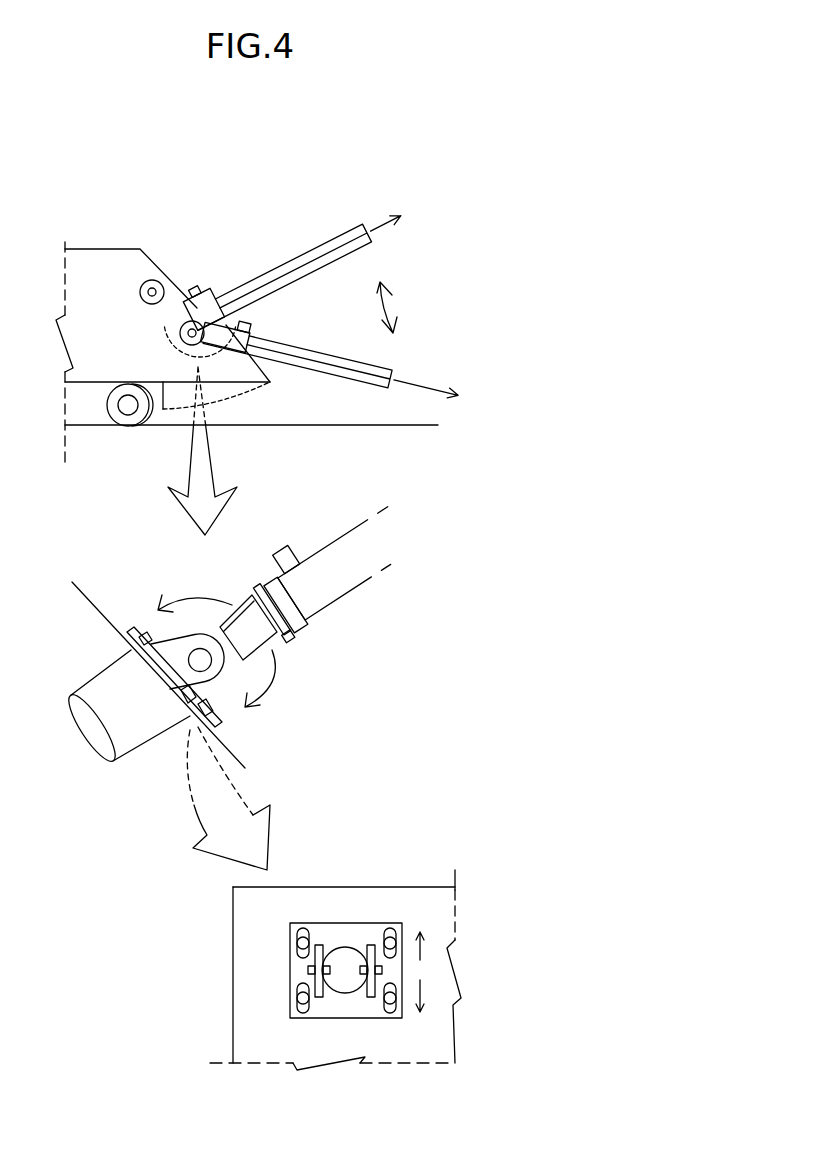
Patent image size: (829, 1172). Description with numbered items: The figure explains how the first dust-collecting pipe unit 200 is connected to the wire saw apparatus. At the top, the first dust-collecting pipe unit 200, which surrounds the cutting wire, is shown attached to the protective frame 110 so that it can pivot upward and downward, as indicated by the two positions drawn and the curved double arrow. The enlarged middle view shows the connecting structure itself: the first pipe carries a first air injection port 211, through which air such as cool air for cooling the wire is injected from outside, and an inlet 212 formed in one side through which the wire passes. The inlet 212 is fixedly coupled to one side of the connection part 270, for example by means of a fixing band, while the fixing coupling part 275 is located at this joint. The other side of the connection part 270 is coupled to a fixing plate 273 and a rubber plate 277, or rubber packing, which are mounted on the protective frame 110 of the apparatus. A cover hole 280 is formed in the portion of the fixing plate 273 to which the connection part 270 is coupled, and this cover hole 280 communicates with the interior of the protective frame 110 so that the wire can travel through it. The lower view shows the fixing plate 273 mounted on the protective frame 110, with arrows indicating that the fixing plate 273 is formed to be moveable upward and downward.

The protective frame 110 is at (168, 271).
The first dust-collecting pipe unit 200 is at (327, 242).
The first air injection port 211 is at (283, 546).
The inlet 212 is at (300, 617).
The connection part 270 is at (253, 598).
The fixing plate 273 is at (132, 632).
The fixing coupling part 275 is at (285, 632).
The rubber plate 277 is at (207, 697).
The cover hole 280 is at (92, 740).